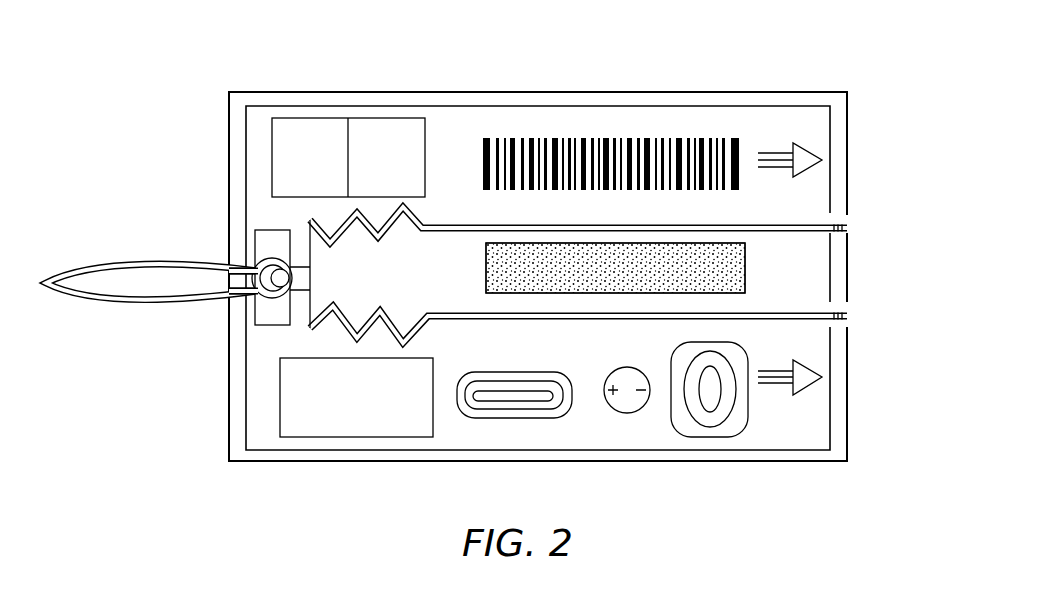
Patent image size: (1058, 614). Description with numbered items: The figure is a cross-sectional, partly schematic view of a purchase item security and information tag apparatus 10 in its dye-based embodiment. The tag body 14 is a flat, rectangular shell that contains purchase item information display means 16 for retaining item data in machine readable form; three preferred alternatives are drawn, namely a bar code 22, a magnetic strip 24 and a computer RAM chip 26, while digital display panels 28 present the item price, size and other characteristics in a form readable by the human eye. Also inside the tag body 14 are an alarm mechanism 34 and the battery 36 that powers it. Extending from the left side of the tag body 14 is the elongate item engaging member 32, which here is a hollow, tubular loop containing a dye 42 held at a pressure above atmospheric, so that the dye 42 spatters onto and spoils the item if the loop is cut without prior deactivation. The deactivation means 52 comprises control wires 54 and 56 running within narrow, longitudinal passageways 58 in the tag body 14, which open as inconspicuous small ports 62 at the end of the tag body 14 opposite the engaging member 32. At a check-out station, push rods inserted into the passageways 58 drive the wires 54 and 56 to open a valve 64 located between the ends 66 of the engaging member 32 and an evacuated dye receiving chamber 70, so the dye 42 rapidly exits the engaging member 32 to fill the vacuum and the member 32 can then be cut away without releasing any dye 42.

The purchase item security and information tag apparatus 10 is at (736, 40).
The tag body 14 is at (627, 92).
The purchase item information display means 16 is at (606, 347).
The bar code 22 is at (603, 141).
The magnetic strip 24 is at (693, 243).
The computer RAM chip 26 is at (735, 430).
The digital display panel 28 is at (325, 118).
The elongate item engaging member 32 is at (118, 305).
The alarm mechanism 34 is at (498, 418).
The battery 36 is at (627, 413).
The dye 42 is at (95, 263).
The deactivation means 52 is at (883, 147).
The control wire 54 is at (570, 222).
The control wire 56 is at (530, 322).
The passageway 58 is at (790, 312).
The port 62 is at (848, 215).
The valve 64 is at (286, 278).
The end of engaging member 66 is at (290, 250).
The dye receiving chamber 70 is at (277, 282).